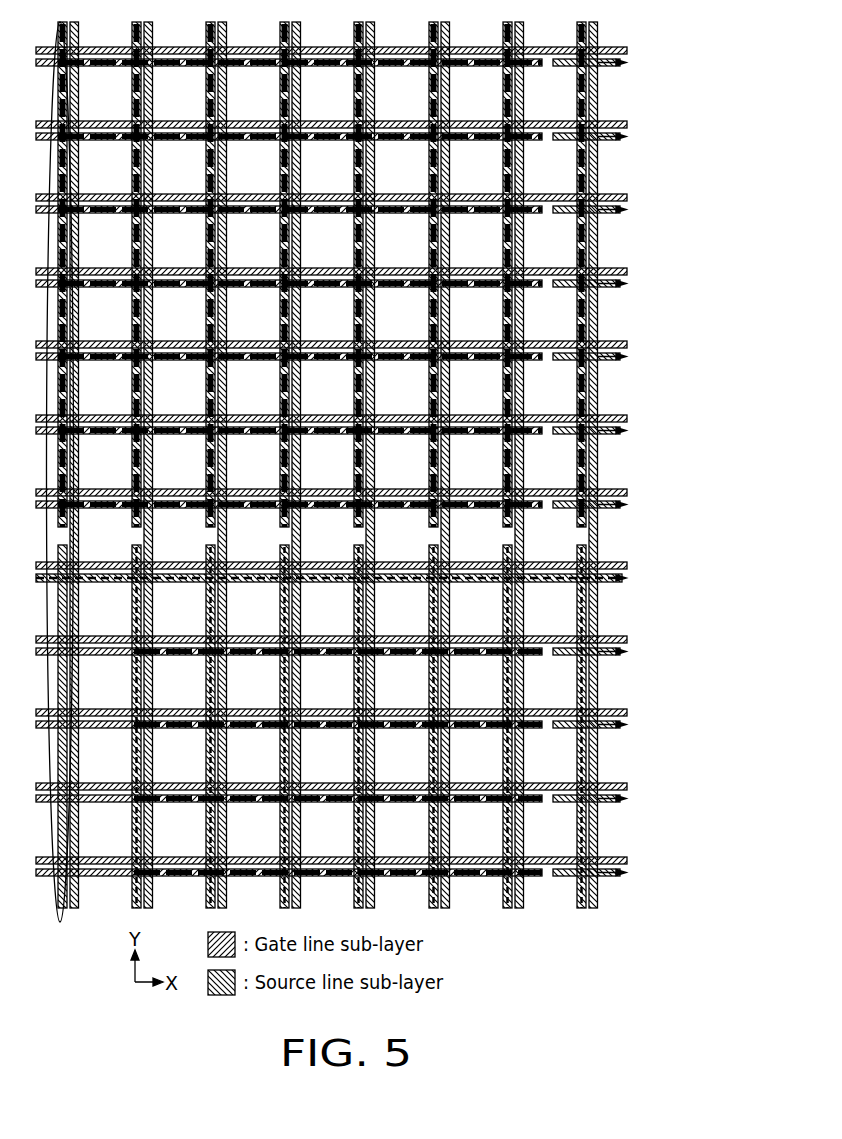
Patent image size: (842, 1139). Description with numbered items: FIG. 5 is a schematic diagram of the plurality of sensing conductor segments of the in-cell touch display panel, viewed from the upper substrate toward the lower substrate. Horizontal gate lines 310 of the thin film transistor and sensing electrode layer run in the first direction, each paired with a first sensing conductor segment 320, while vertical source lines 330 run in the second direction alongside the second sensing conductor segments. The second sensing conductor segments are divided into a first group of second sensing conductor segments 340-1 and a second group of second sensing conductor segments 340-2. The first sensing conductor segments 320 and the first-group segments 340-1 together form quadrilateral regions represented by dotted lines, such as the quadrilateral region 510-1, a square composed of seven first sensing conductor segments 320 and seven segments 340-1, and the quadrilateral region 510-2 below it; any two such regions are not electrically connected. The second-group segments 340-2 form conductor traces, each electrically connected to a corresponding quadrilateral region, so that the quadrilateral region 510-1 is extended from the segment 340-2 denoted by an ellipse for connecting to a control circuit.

The gate lines 310 is at (627, 861).
The first sensing conductor segments 320 is at (612, 877).
The source lines 330 is at (520, 908).
The second sensing conductor segments of the first group 340-1 is at (505, 908).
The second sensing conductor segments of the second group 340-2 is at (582, 908).
The quadrilateral region 510-1 is at (510, 385).
The quadrilateral region 510-2 is at (510, 593).